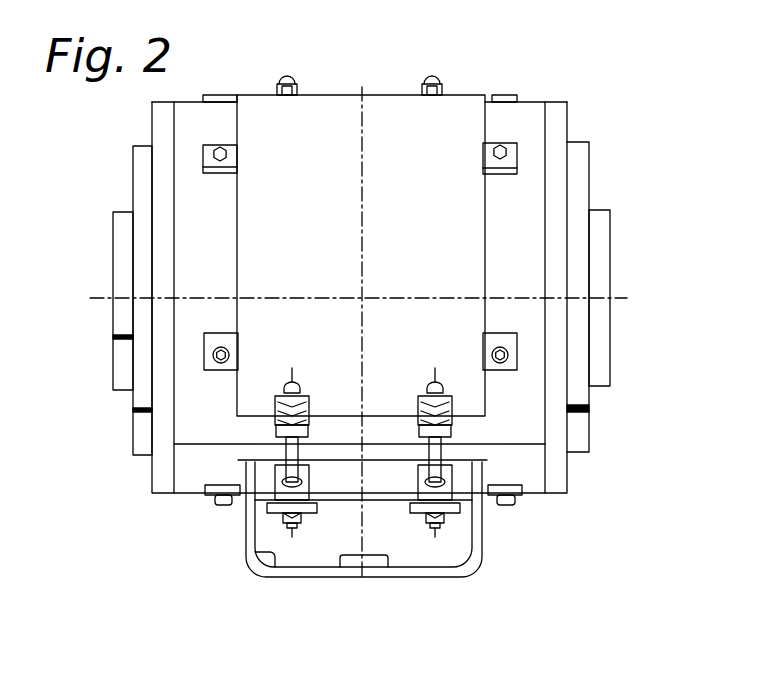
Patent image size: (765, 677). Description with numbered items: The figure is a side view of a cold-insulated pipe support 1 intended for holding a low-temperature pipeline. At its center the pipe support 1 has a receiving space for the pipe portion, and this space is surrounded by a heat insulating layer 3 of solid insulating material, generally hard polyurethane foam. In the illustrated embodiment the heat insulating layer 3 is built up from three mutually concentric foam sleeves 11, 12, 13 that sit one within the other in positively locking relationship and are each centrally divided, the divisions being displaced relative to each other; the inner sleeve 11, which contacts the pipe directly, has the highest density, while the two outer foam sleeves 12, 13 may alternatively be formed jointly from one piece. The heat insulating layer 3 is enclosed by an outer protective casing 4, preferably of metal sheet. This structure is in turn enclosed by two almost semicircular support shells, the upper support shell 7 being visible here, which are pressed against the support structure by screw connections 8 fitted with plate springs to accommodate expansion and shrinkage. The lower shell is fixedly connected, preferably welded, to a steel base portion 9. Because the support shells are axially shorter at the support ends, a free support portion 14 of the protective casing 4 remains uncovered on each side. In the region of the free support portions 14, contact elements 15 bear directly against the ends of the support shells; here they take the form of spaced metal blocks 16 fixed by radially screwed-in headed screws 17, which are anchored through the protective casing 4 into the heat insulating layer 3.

The cold-insulated pipe support 1 is at (637, 279).
The heat insulating layer 3 is at (603, 424).
The outer protective casing 4 is at (536, 128).
The support shell 7 is at (420, 200).
The screw connections 8 is at (213, 495).
The base portion 9 is at (466, 571).
The inner foam sleeve 11 is at (595, 240).
The foam sleeve 12 is at (572, 168).
The outer foam sleeve 13 is at (555, 122).
The free support portion 14 is at (212, 124).
The contact elements 15 is at (190, 155).
The metal blocks 16 is at (203, 342).
The headed screws 17 is at (207, 355).